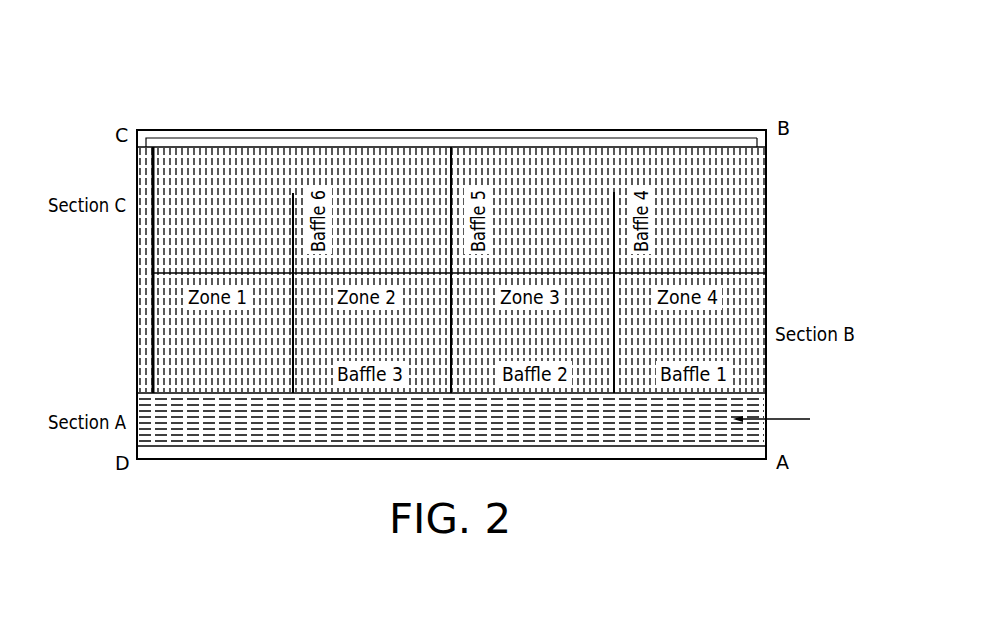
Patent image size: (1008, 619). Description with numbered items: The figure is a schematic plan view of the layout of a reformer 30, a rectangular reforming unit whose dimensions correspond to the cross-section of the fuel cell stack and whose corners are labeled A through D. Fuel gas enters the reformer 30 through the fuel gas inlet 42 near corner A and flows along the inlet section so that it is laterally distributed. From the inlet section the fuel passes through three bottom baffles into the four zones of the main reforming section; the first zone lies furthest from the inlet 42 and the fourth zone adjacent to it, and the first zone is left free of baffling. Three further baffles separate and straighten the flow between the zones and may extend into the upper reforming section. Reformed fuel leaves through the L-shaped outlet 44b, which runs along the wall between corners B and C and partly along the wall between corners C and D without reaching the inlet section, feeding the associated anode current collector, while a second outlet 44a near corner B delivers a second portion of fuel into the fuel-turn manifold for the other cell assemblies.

The reformer 30 is at (628, 80).
The fuel gas inlet 42 is at (767, 420).
The second outlet 44a is at (766, 142).
The outlet 44b is at (459, 140).